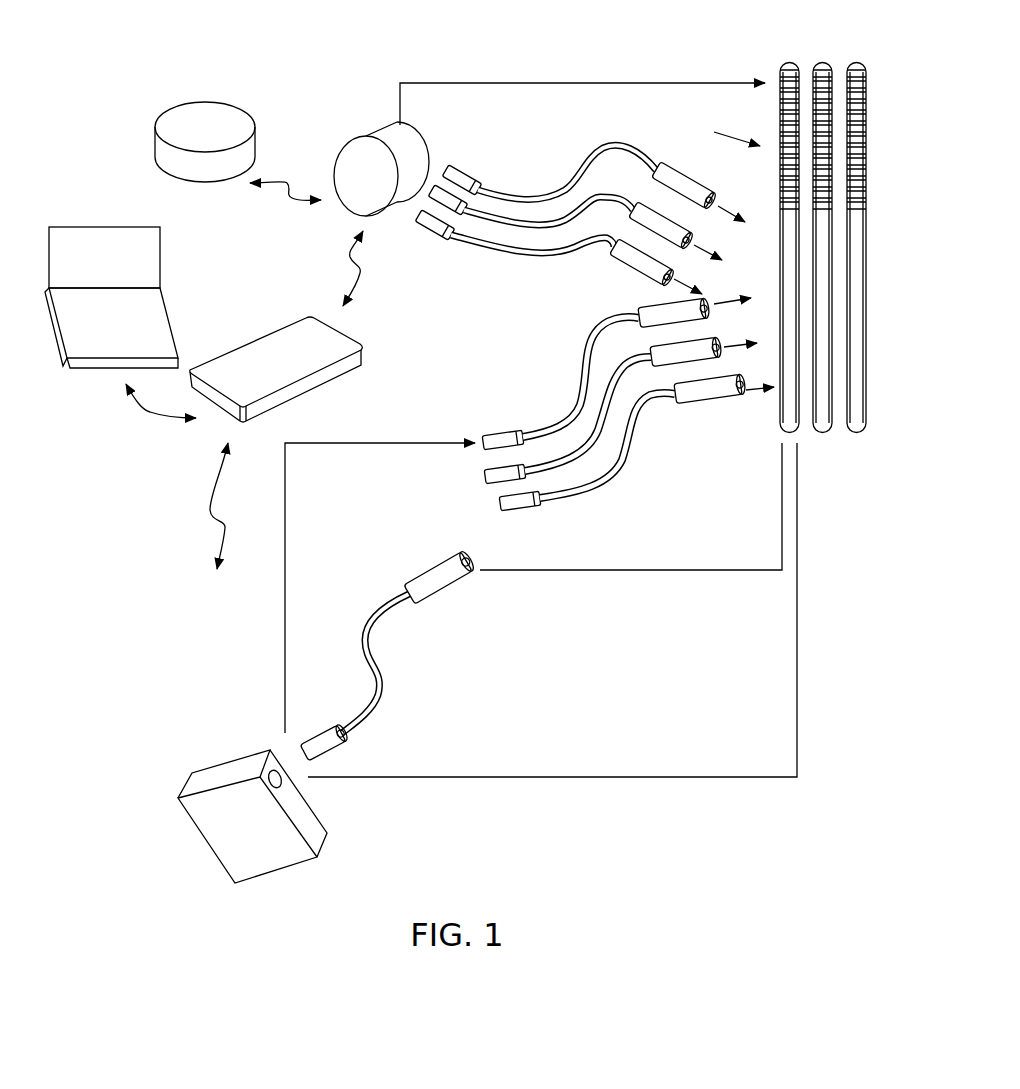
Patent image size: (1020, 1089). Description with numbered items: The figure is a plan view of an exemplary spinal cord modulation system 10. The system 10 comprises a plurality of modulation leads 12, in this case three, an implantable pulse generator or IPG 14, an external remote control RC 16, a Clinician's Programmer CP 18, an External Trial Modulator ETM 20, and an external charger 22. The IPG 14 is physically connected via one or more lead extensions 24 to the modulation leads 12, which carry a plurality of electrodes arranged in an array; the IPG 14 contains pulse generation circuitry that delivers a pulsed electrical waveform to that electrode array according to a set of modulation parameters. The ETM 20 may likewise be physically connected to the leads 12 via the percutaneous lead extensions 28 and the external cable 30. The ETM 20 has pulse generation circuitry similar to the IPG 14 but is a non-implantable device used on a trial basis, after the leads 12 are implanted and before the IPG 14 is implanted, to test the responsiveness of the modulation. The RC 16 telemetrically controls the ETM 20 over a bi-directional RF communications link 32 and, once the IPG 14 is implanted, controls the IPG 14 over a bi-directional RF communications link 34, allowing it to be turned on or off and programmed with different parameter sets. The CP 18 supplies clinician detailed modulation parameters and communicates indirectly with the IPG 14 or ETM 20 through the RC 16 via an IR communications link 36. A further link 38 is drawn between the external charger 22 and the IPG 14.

The spinal cord modulation (SCM) system 10 is at (549, 37).
The modulation leads 12 is at (749, 223).
The implantable pulse generator (IPG) 14 is at (367, 136).
The external remote control (RC) 16 is at (288, 334).
The Clinician's Programmer (CP) 18 is at (91, 240).
The External Trial Modulator (ETM) 20 is at (226, 776).
The external charger 22 is at (208, 110).
The lead extensions 24 is at (600, 237).
The percutaneous lead extensions 28 is at (552, 495).
The external cable 30 is at (385, 606).
The bi-directional RF communications link 32 is at (223, 548).
The bi-directional RF communications link 34 is at (362, 281).
The IR communications link 36 is at (151, 413).
The charger to IPG link 38 is at (264, 186).